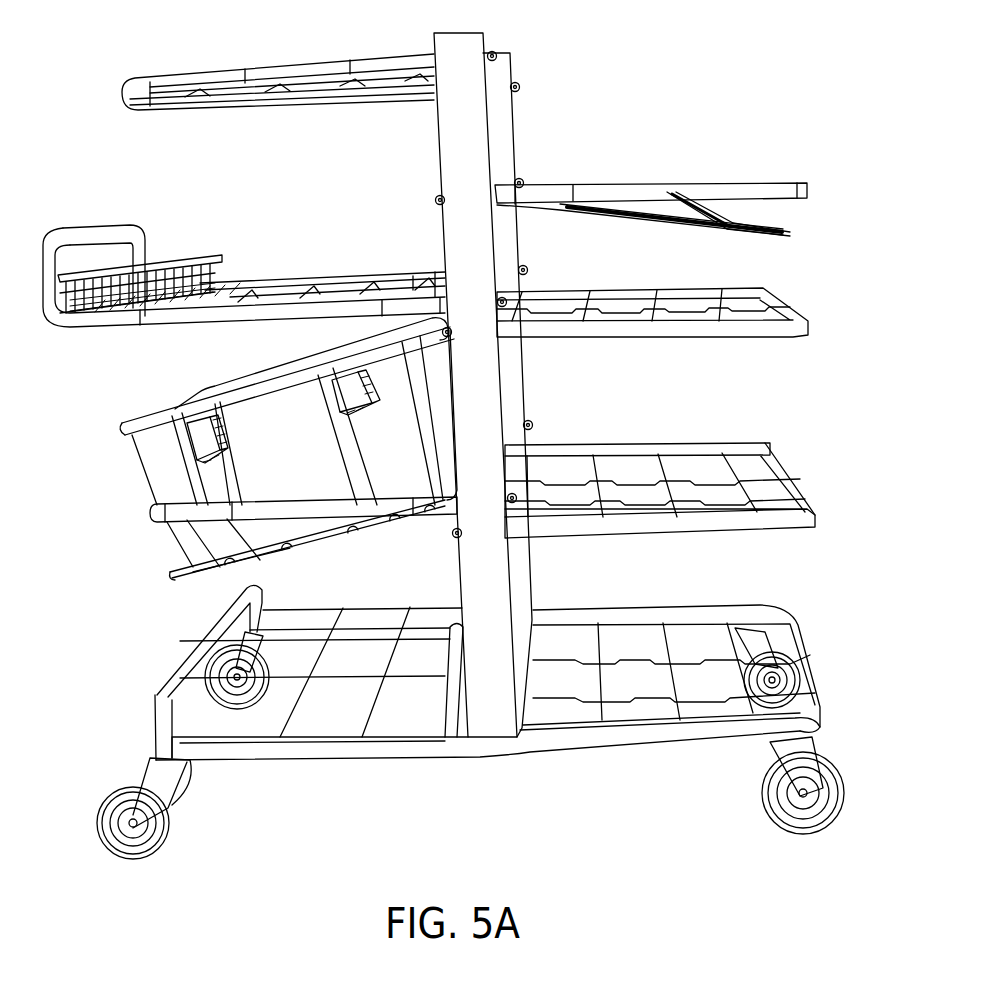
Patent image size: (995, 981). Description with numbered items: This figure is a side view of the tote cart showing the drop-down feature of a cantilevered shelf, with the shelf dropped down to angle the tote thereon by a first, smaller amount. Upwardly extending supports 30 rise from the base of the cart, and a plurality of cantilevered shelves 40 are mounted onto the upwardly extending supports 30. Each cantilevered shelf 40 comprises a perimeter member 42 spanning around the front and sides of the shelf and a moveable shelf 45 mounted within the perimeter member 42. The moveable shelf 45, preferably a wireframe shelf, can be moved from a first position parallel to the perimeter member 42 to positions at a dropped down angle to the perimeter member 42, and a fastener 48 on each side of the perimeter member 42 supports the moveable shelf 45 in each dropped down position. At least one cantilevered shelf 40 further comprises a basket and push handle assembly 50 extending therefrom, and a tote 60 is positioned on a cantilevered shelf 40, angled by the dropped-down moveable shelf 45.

The upwardly extending supports 30 is at (513, 130).
The cantilevered shelf 40 is at (290, 62).
The perimeter member 42 is at (808, 190).
The moveable shelf 45 is at (757, 237).
The fastener 48 is at (710, 223).
The basket and push handle assembly 50 is at (98, 225).
The tote 60 is at (200, 400).